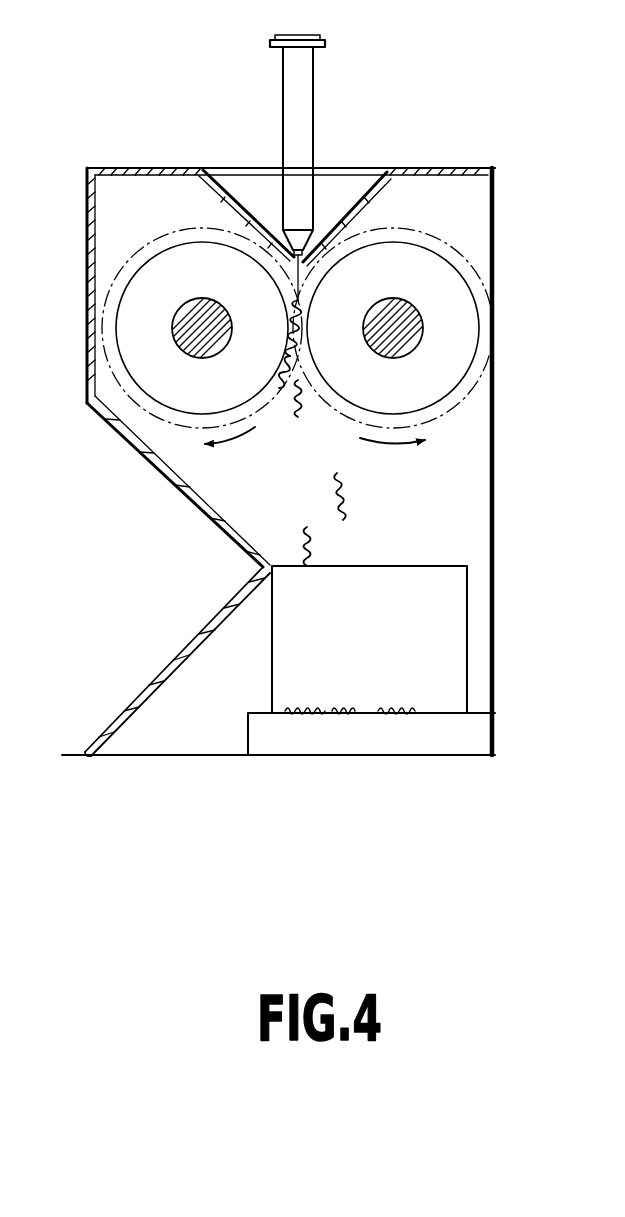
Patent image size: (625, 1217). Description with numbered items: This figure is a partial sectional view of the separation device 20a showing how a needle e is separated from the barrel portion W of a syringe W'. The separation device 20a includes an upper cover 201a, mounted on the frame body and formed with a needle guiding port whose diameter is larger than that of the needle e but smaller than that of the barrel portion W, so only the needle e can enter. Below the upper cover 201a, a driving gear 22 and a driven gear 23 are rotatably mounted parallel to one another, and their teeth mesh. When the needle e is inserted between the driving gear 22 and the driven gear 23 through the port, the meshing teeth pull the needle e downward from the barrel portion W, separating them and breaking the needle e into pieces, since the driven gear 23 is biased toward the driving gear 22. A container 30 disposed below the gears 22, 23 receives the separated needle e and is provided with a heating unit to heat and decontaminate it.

The separation device 20a is at (459, 163).
The upper cover 201a is at (142, 172).
The driving gear 22 is at (448, 297).
The driven gear 23 is at (120, 328).
The container 30 is at (453, 640).
The barrel portion w is at (321, 151).
The syringe w' is at (284, 23).
The needle e is at (305, 281).